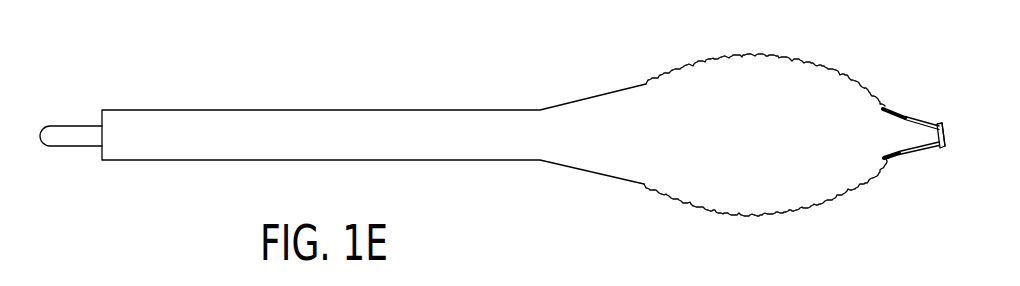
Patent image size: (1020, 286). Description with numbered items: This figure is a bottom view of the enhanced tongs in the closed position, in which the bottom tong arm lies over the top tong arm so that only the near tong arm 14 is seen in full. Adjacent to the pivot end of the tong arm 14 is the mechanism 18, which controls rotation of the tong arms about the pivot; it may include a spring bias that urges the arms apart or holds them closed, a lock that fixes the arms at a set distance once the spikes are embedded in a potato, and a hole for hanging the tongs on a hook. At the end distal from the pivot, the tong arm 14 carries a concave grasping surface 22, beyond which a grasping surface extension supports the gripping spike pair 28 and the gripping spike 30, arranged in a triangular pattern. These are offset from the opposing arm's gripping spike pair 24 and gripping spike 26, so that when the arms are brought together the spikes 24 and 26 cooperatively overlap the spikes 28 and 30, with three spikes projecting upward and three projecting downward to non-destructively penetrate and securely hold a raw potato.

The tong arm 14 is at (320, 110).
The mechanism 18 is at (82, 125).
The grasping surface 22 is at (760, 56).
The gripping spike pair 24 is at (895, 157).
The gripping spike 26 is at (942, 133).
The gripping spike pair 28 is at (895, 157).
The gripping spike 30 is at (940, 140).